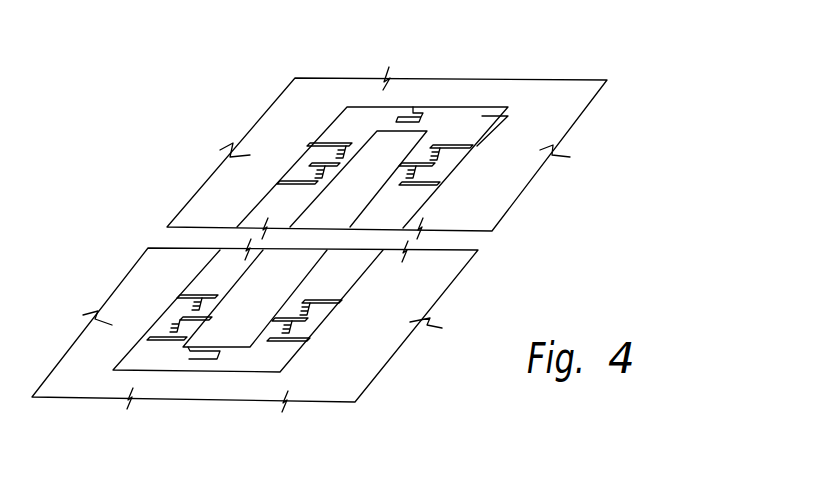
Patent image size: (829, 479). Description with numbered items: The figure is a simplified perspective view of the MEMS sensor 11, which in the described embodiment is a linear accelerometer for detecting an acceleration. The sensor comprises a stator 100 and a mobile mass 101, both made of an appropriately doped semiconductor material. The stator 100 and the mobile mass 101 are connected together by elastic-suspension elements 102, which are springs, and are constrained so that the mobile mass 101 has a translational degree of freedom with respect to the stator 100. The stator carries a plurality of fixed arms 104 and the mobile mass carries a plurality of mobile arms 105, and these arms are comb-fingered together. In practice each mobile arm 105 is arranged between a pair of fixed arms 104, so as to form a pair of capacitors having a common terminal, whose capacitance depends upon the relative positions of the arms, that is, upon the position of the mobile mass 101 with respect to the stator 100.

The MEMS sensor 11 is at (610, 170).
The stator 100 is at (311, 83).
The mobile mass 101 is at (428, 132).
The elastic-suspension elements 102 is at (412, 110).
The fixed arms 104 is at (337, 140).
The mobile arms 105 is at (350, 157).